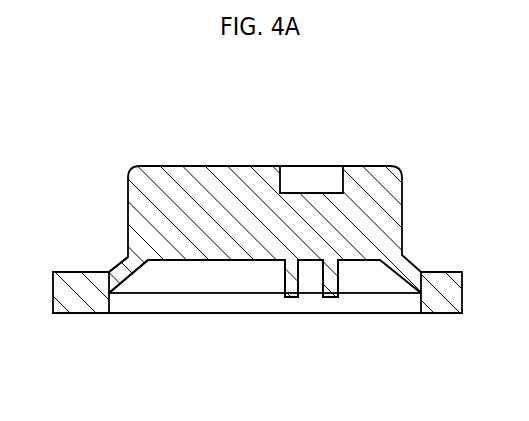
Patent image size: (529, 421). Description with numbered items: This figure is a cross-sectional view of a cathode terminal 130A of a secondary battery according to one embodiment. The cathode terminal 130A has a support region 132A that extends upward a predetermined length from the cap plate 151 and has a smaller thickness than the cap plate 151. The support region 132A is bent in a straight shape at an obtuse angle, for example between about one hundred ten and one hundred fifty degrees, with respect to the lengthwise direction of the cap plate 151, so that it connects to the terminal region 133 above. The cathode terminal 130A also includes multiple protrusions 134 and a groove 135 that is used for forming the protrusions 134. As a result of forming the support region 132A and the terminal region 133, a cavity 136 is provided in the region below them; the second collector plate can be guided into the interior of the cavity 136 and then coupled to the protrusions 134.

The cathode terminal 130A is at (443, 125).
The support region 132A is at (122, 266).
The terminal region 133 is at (218, 182).
The protrusions 134 is at (293, 283).
The groove 135 is at (312, 178).
The cavity 136 is at (188, 302).
The cap plate 151 is at (79, 303).